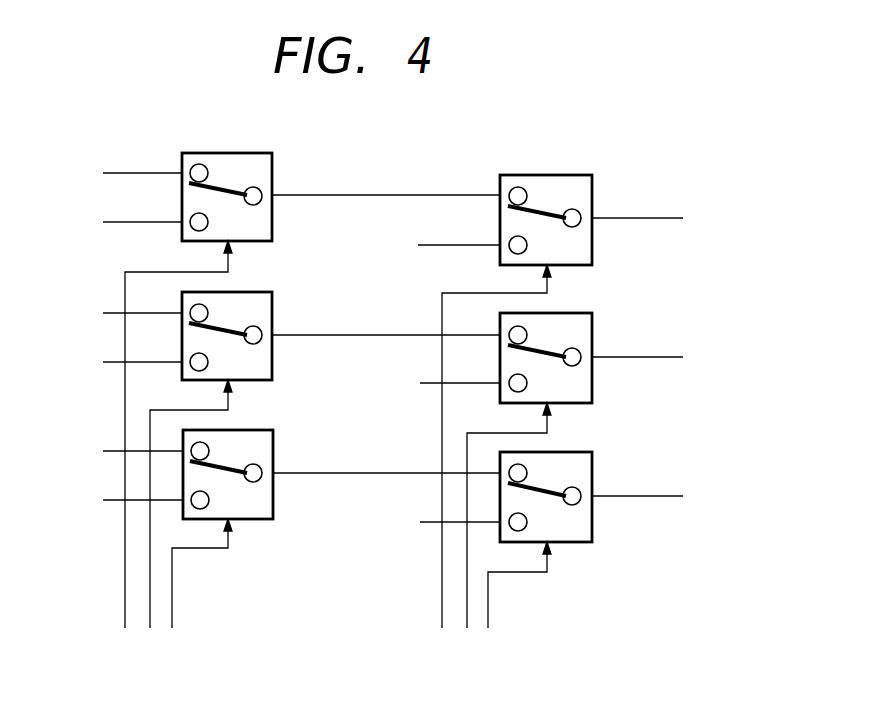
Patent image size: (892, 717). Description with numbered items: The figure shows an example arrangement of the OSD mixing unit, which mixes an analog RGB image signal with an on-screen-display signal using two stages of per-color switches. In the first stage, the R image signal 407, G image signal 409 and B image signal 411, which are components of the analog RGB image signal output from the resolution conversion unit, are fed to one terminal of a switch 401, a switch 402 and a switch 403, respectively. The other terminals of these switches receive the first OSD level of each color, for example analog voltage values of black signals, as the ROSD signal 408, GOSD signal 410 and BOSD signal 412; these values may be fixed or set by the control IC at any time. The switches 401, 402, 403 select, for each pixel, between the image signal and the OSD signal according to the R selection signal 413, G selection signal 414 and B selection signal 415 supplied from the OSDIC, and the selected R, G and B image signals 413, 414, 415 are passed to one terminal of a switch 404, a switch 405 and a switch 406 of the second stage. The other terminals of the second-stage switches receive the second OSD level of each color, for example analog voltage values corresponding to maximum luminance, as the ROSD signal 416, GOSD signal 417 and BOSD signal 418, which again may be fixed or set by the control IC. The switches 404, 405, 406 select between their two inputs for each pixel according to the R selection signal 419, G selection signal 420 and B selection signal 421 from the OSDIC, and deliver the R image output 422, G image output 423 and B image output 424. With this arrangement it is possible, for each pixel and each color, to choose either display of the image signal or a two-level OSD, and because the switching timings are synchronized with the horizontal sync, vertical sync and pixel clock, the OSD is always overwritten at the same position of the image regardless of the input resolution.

The switch 401 is at (232, 178).
The switch 402 is at (232, 317).
The switch 403 is at (233, 455).
The switch 404 is at (550, 202).
The switch 405 is at (550, 340).
The switch 406 is at (550, 479).
The R image signal 407 is at (112, 175).
The ROSD signal 408 is at (112, 224).
The G image signal 409 is at (112, 315).
The GOSD signal 410 is at (112, 364).
The B image signal 411 is at (112, 453).
The BOSD signal 412 is at (112, 502).
The R selection signal 413 is at (323, 193).
The G selection signal 414 is at (323, 333).
The B selection signal 415 is at (323, 471).
The ROSD signal 416 is at (430, 245).
The GOSD signal 417 is at (432, 383).
The BOSD signal 418 is at (432, 522).
The R selection signal 419 is at (442, 590).
The G selection signal 420 is at (467, 595).
The B selection signal 421 is at (488, 600).
The R image output 422 is at (640, 217).
The G image output 423 is at (640, 356).
The B image output 424 is at (640, 495).